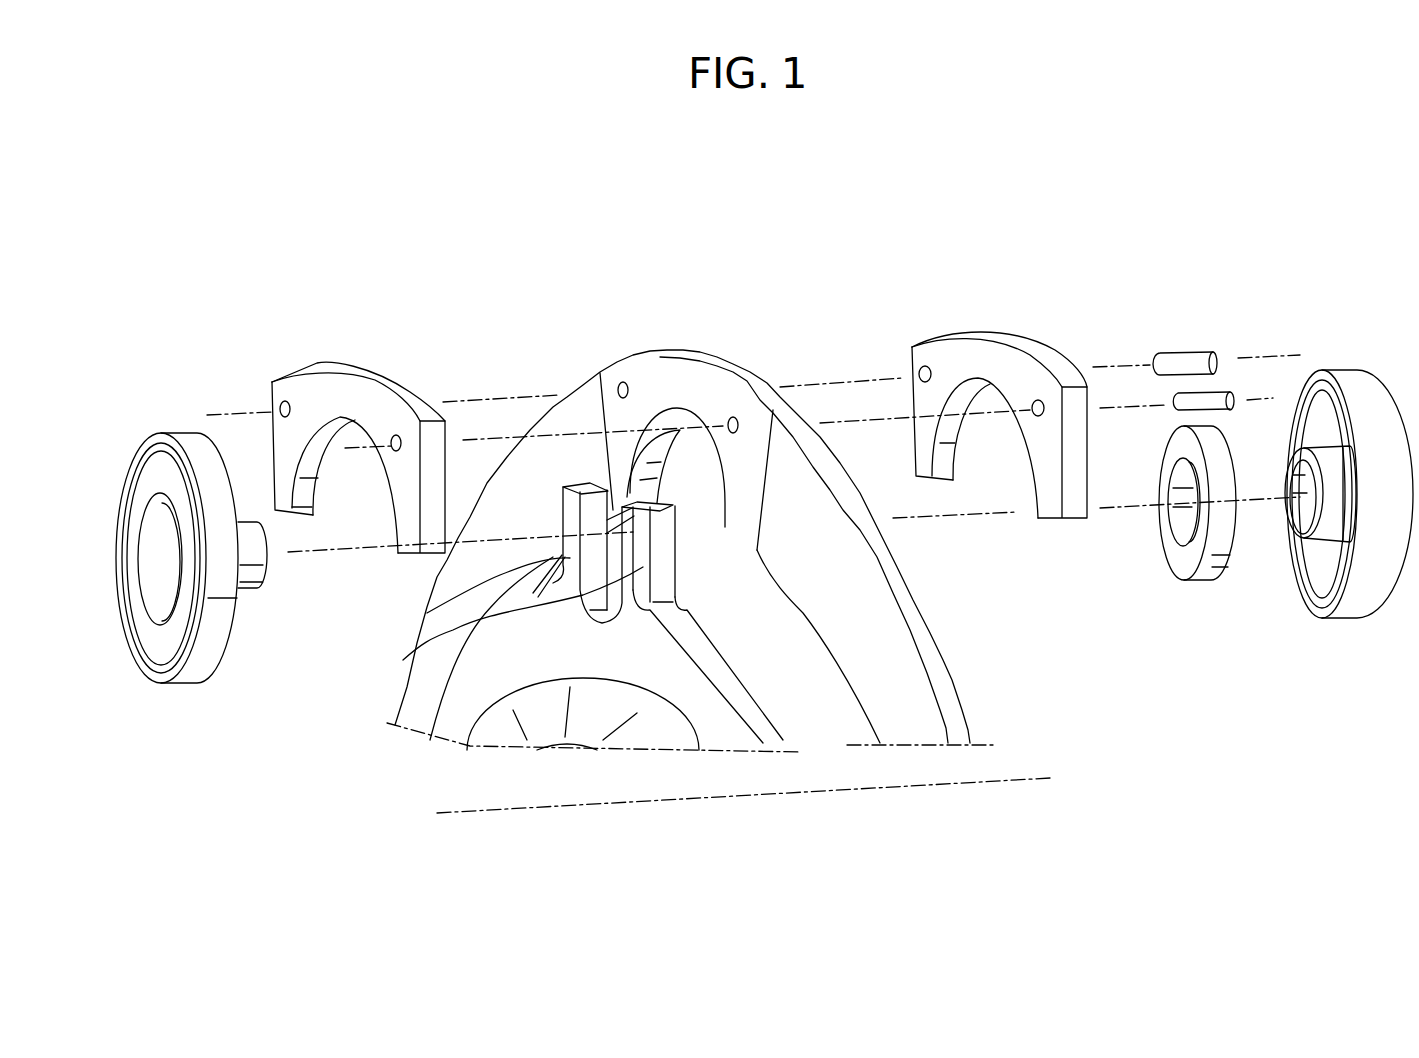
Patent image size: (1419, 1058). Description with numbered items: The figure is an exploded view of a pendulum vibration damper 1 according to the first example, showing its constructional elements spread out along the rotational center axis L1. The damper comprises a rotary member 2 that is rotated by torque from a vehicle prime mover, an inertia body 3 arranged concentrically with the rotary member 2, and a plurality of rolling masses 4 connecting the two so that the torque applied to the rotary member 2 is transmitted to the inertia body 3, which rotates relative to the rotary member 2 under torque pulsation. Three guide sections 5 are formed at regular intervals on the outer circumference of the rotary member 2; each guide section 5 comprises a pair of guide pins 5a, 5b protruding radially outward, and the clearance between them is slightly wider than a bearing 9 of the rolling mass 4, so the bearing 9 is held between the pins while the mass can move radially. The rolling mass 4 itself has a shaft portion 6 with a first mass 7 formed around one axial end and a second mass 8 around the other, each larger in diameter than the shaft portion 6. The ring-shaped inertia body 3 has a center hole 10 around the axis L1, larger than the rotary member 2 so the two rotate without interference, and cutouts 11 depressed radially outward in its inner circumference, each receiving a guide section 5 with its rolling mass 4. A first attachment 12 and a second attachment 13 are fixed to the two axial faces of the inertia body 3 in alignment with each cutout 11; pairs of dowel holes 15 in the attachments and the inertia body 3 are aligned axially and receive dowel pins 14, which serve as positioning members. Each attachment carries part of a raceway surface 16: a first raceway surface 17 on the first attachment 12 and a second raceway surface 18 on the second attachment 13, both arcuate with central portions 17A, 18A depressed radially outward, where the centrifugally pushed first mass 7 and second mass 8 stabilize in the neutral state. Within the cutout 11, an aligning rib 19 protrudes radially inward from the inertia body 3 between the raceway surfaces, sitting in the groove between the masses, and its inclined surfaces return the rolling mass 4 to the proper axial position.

The pendulum vibration damper 1 is at (723, 258).
The rotary member 2 is at (745, 688).
The inertia body 3 is at (805, 485).
The rolling mass 4 is at (1370, 353).
The guide section 5 is at (583, 617).
The guide pin 5a is at (427, 613).
The guide pin 5b is at (403, 660).
The shaft portion 6 is at (255, 548).
The first mass 7 is at (202, 665).
The second mass 8 is at (1378, 597).
The bearing 9 is at (1228, 537).
The center hole 10 is at (800, 607).
The cutout 11 is at (677, 517).
The first attachment 12 is at (416, 392).
The second attachment 13 is at (1043, 350).
The dowel pin 14 is at (1225, 392).
The dowel hole 15 is at (394, 436).
The raceway surface 16 is at (313, 462).
The first raceway surface 17 is at (332, 482).
The central portion 17A is at (357, 421).
The second raceway surface 18 is at (993, 471).
The central portion 18A is at (992, 386).
The aligning rib 19 is at (682, 430).
The rotational center axis L1 is at (997, 780).